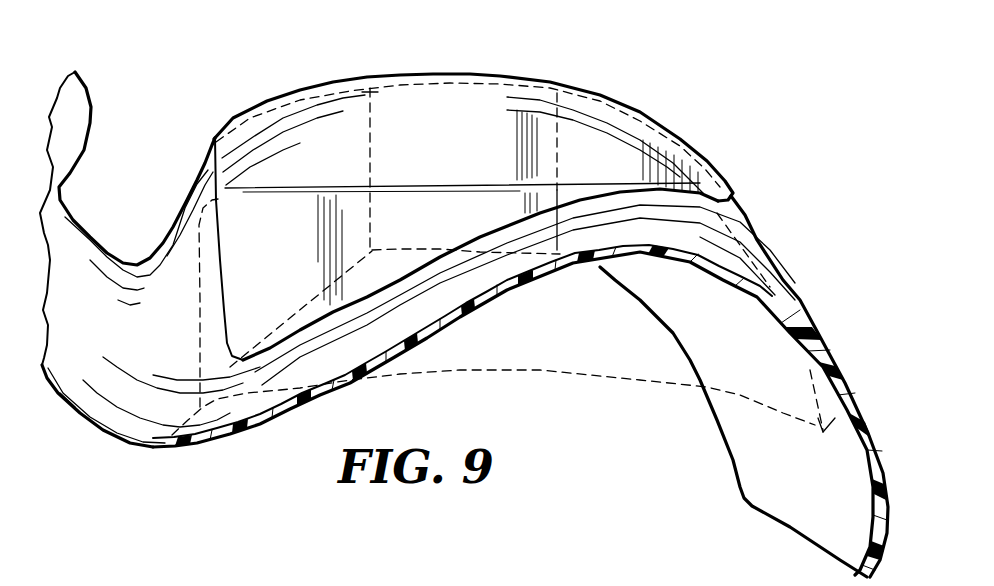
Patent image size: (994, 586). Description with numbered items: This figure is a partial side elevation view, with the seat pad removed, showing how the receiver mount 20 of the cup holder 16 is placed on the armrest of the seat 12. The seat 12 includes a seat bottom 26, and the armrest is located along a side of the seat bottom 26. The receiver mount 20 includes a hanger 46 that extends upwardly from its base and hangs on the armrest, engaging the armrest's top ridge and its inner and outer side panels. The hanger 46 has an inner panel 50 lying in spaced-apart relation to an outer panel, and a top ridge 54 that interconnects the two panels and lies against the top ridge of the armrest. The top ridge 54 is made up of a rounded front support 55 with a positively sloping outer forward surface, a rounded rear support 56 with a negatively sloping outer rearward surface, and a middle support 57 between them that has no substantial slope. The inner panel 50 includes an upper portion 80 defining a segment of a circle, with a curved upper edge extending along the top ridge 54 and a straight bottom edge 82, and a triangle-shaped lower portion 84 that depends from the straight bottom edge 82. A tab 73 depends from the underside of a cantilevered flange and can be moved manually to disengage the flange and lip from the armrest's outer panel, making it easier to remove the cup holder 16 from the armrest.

The seat 12 is at (100, 109).
The cup holder 16 is at (227, 112).
The receiver mount 20 is at (710, 133).
The seat bottom 26 is at (452, 327).
The hanger 46 is at (672, 110).
The inner panel 50 is at (240, 283).
The top ridge 54 is at (419, 65).
The front support 55 is at (640, 110).
The rear support 56 is at (287, 97).
The middle support 57 is at (518, 85).
The tab 73 is at (483, 308).
The upper portion 80 is at (457, 143).
The straight bottom edge 82 is at (277, 187).
The lower portion 84 is at (284, 265).